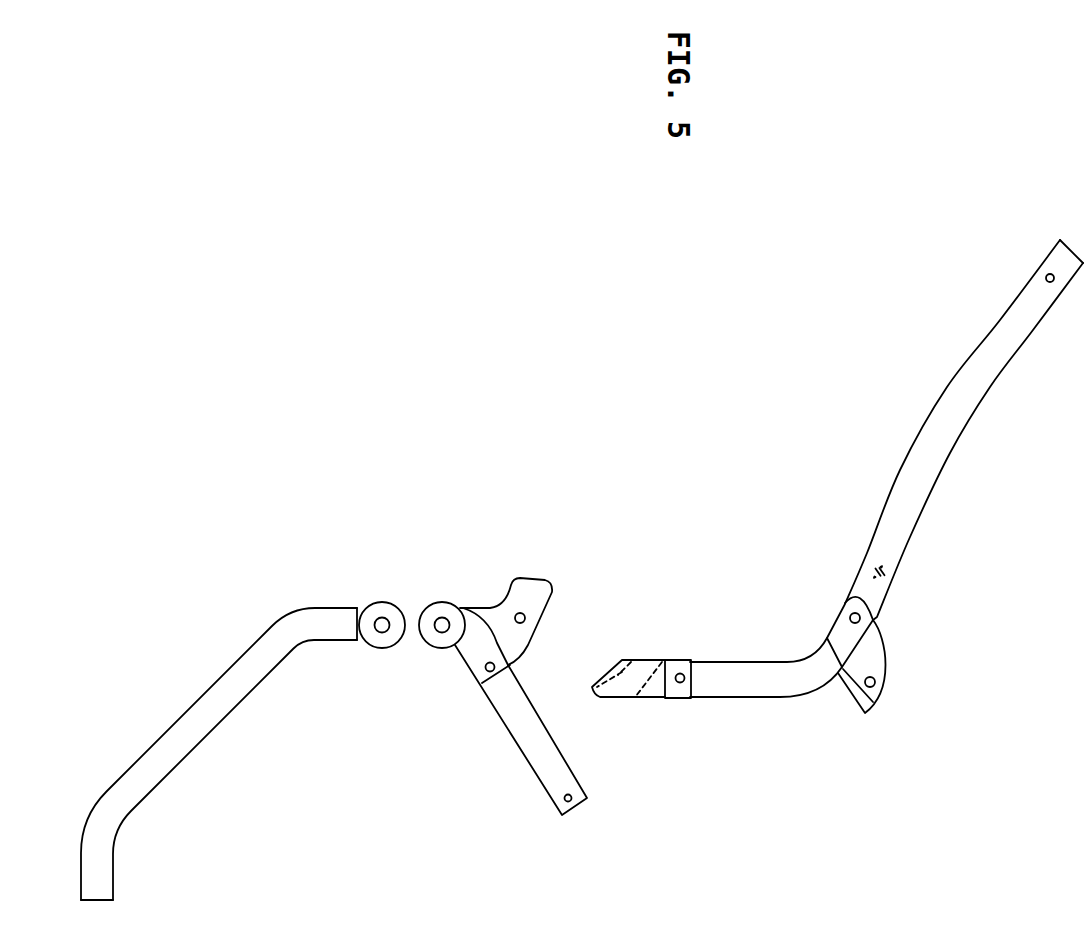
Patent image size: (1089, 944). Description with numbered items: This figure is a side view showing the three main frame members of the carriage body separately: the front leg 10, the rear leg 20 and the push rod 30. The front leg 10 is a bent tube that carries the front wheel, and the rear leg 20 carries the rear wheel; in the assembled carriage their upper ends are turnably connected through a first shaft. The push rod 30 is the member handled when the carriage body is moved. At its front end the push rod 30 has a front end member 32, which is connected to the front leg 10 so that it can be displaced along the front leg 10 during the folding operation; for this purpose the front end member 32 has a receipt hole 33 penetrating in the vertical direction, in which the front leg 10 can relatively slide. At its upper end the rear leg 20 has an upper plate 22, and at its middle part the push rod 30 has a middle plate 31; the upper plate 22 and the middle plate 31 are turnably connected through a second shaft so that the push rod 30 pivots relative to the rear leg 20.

The front leg 10 is at (185, 725).
The rear leg 20 is at (542, 758).
The upper plate 22 is at (524, 590).
The push rod 30 is at (982, 374).
The middle plate 31 is at (872, 663).
The front end member 32 is at (663, 688).
The receipt hole 33 is at (637, 658).